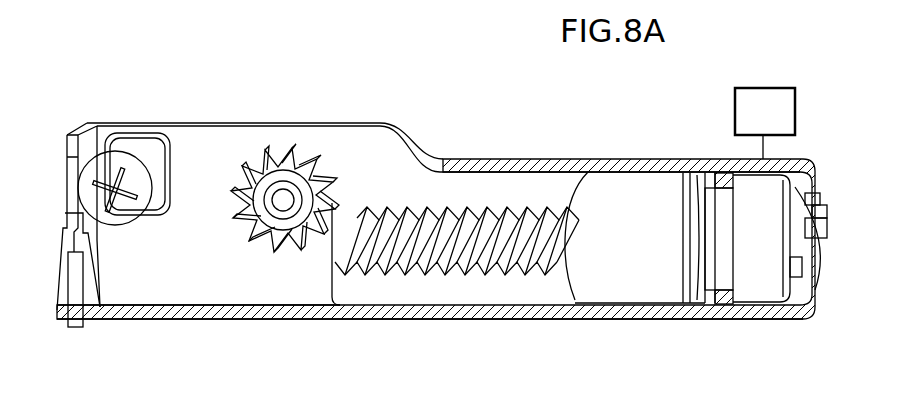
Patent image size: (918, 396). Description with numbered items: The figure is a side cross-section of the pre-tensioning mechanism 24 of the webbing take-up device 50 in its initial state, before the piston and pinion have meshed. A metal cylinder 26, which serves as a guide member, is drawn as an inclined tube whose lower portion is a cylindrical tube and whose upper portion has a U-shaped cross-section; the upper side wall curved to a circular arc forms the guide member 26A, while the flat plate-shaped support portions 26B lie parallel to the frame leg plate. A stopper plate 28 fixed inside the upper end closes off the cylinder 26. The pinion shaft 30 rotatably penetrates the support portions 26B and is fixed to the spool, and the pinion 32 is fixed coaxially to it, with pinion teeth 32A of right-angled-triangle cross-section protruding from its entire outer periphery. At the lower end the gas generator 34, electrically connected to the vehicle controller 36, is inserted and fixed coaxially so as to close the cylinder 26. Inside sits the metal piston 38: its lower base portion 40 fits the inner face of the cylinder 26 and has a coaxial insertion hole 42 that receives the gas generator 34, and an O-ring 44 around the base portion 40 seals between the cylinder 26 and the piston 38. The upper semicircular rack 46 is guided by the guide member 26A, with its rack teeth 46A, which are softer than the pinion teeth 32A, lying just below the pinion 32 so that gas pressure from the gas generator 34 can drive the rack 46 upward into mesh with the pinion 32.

The pre-tensioning mechanism 24 is at (274, 86).
The webbing take-up device 50 is at (431, 213).
The cylinder 26 is at (527, 159).
The guide member 26A is at (167, 320).
The support portions 26B is at (180, 118).
The stopper plate 28 is at (73, 132).
The pinion shaft 30 is at (277, 203).
The pinion 32 is at (298, 133).
The pinion teeth 32A is at (323, 243).
The gas generator 34 is at (757, 317).
The controller 36 is at (763, 88).
The piston 38 is at (622, 162).
The base portion 40 is at (625, 307).
The insertion hole 42 is at (727, 290).
The O-ring 44 is at (698, 173).
The rack 46 is at (442, 307).
The rack teeth 46A is at (352, 210).